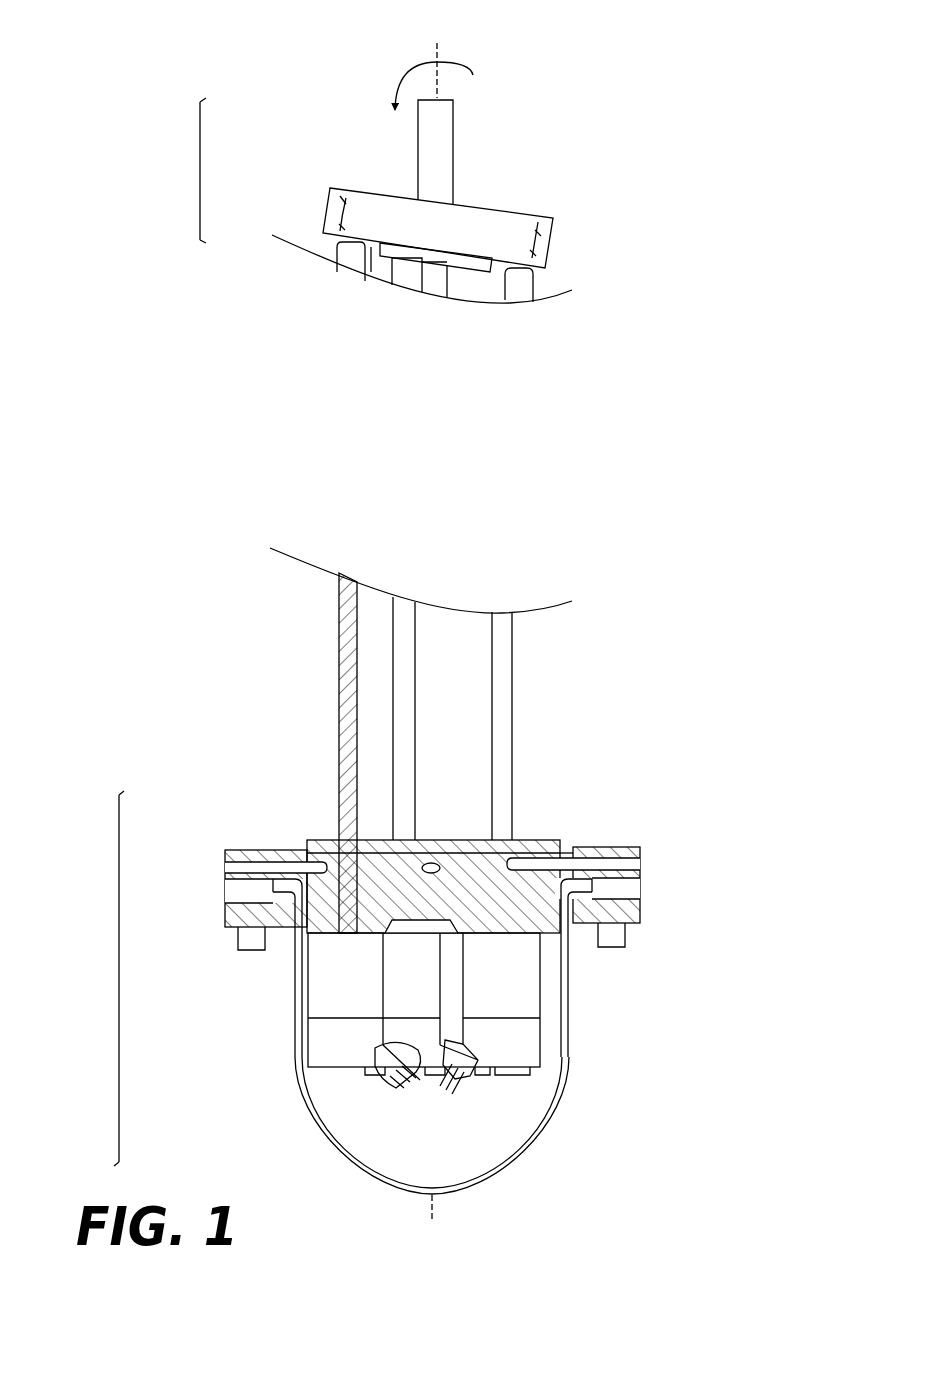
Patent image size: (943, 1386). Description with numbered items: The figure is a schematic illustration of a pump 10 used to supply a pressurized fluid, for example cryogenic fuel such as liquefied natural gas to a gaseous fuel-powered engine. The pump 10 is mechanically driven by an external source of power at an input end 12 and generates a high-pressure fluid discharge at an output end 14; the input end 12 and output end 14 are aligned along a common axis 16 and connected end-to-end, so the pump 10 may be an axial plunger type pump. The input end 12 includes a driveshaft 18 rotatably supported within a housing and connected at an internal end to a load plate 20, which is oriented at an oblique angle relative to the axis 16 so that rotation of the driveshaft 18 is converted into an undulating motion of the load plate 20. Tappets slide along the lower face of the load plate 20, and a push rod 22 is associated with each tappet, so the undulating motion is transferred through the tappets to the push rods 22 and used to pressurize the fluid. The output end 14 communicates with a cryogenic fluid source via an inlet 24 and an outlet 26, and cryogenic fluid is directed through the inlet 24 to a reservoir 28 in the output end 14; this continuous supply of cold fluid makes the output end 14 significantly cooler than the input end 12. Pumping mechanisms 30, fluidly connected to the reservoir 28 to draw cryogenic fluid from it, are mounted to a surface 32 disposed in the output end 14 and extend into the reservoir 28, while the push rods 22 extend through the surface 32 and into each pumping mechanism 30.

The pump 10 is at (762, 148).
The input end 12 is at (200, 168).
The output end 14 is at (119, 975).
The common axis 16 is at (441, 56).
The driveshaft 18 is at (441, 157).
The load plate 20 is at (428, 238).
The push rod 22 is at (339, 714).
The inlet 24 is at (222, 866).
The outlet 26 is at (652, 866).
The reservoir 28 is at (422, 1151).
The pumping mechanism 30 is at (512, 1000).
The surface 32 is at (553, 942).